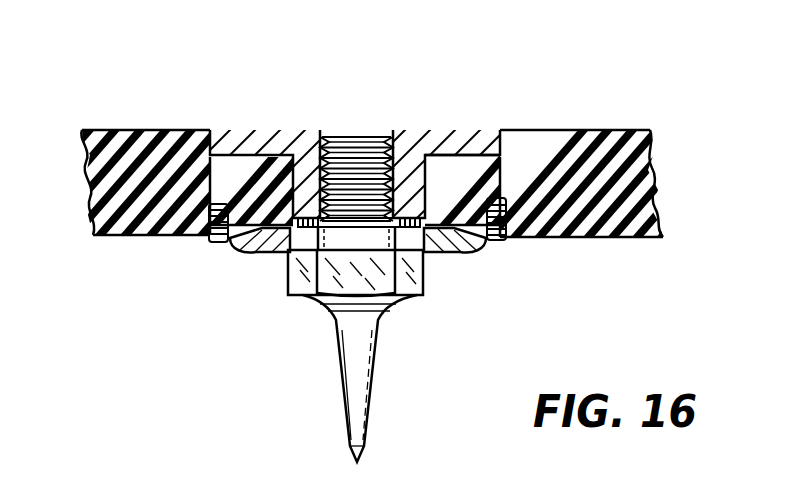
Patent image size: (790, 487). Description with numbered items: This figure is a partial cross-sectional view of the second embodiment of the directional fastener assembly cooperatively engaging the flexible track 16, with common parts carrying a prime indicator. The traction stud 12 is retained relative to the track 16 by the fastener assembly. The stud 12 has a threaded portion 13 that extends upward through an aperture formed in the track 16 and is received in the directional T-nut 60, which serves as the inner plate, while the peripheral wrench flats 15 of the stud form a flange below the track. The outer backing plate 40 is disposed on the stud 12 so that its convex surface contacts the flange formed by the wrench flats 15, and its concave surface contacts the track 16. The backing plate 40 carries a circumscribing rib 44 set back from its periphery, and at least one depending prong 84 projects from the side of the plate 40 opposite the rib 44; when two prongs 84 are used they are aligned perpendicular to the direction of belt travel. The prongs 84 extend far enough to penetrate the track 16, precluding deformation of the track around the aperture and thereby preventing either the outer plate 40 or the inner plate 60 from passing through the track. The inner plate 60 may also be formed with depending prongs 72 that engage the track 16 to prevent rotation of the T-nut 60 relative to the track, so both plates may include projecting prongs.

The flexible track 16 is at (652, 188).
The T-nut 60 is at (455, 131).
The depending prongs 72 is at (500, 131).
The threaded portion 13 is at (340, 130).
The wrench flats 15 is at (294, 280).
The traction stud 12 is at (306, 316).
The depending prong 84 is at (200, 236).
The circumscribing rib 44 is at (240, 255).
The backing plate 40 is at (500, 241).